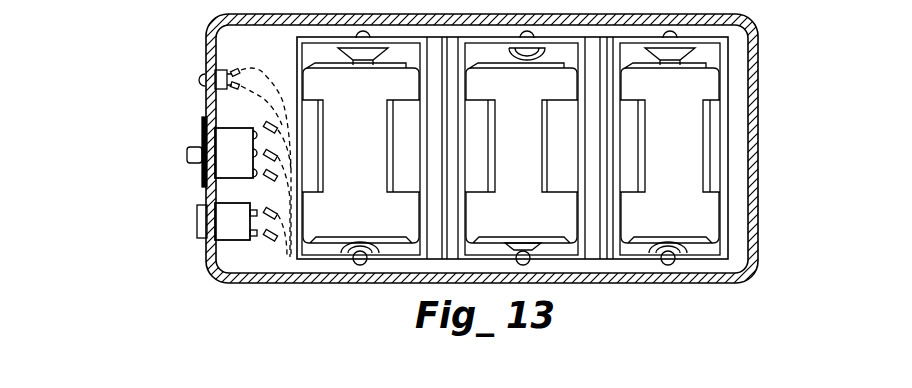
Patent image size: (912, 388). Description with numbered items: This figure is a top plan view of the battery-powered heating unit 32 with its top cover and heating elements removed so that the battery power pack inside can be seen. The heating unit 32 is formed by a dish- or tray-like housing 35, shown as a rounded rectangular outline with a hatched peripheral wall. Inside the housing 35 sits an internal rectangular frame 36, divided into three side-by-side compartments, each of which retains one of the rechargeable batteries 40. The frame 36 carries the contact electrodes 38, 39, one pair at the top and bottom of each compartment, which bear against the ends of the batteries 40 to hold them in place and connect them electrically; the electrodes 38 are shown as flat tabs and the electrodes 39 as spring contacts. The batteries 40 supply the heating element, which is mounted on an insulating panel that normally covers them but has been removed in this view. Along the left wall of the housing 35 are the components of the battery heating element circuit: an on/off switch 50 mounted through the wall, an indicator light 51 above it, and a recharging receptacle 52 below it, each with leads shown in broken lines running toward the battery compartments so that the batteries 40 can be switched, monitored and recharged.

The heating unit 32 is at (748, 281).
The housing 35 is at (704, 18).
The internal rectangular frame 36 is at (730, 50).
The contact electrode 38 is at (363, 62).
The contact electrode 39 is at (530, 50).
The rechargeable battery 40 is at (683, 218).
The on/off switch 50 is at (190, 147).
The indicator light 51 is at (200, 76).
The recharging receptacle 52 is at (197, 230).